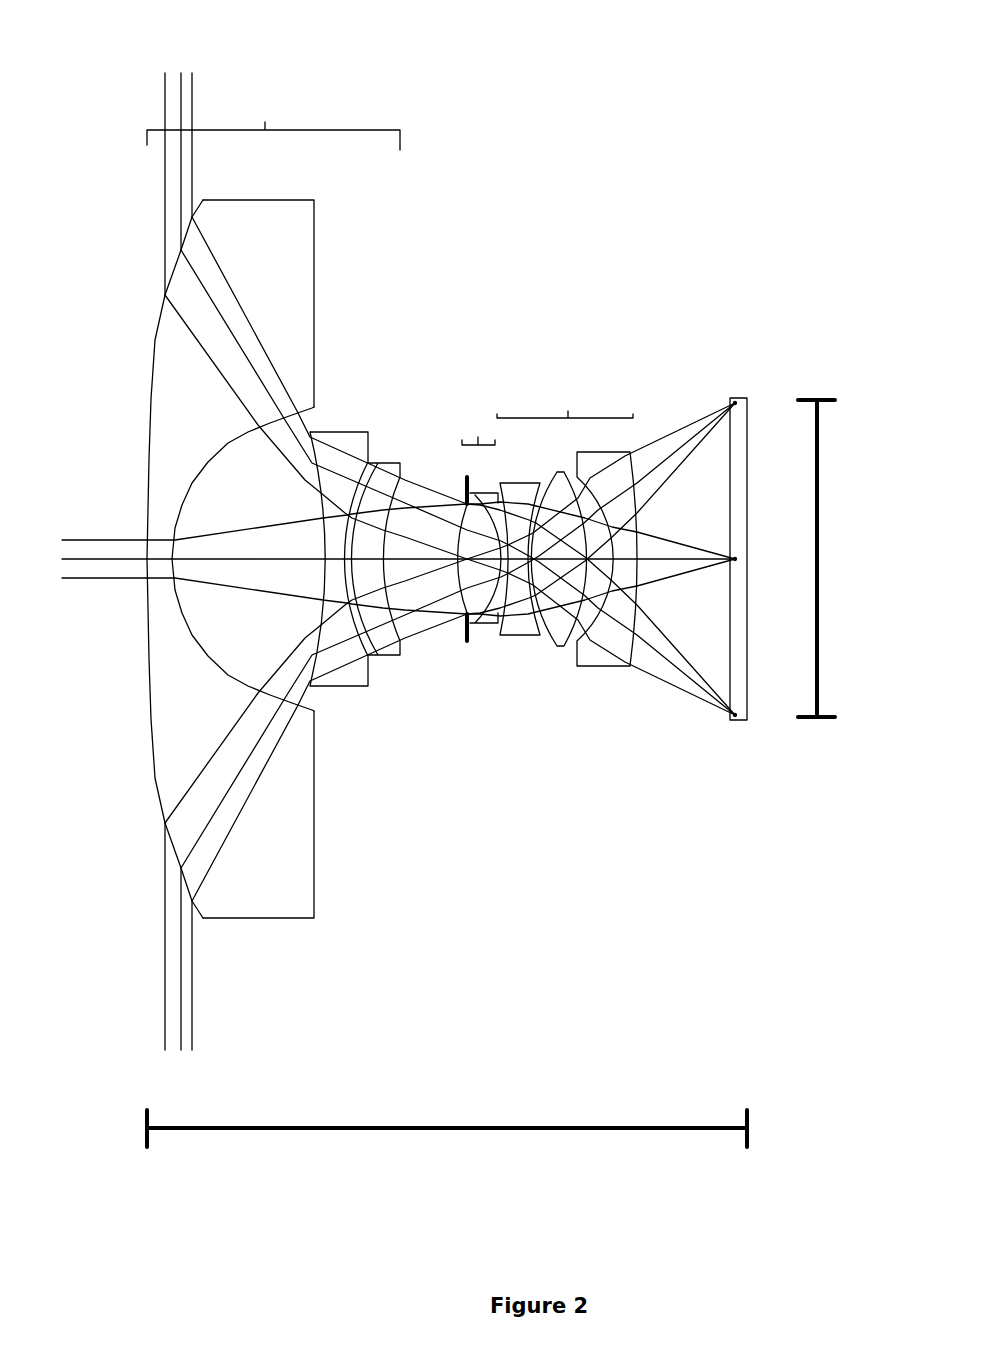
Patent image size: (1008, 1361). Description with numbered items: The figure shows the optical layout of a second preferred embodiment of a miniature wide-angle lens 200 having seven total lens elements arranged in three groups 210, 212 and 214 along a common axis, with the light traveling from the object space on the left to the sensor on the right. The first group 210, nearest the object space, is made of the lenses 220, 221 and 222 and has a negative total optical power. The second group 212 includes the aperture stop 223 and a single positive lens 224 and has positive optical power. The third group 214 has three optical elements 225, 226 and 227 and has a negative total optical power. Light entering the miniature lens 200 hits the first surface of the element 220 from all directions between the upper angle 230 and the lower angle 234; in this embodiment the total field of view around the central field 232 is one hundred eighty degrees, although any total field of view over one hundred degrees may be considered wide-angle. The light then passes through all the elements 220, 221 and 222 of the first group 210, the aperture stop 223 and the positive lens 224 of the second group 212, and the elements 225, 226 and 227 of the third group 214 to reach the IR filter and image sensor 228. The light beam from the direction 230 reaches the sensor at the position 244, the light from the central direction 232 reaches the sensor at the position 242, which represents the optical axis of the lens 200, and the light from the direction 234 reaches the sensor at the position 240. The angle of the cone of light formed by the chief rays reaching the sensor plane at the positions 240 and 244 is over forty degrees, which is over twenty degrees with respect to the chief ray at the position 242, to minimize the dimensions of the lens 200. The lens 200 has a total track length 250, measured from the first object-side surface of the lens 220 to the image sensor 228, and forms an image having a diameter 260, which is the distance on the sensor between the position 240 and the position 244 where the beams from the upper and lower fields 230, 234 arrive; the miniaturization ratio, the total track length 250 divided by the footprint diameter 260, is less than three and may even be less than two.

The miniature wide-angle lens 200 is at (398, 282).
The first group 210 is at (273, 123).
The second group 212 is at (475, 430).
The third group 214 is at (565, 403).
The lens 220 is at (230, 573).
The lens 221 is at (339, 573).
The lens 222 is at (383, 573).
The aperture stop 223 is at (457, 643).
The positive lens 224 is at (479, 589).
The optical element 225 is at (517, 600).
The optical element 226 is at (558, 581).
The optical element 227 is at (607, 580).
The IR filter and image sensor 228 is at (737, 576).
The upper angle 230 is at (442, 379).
The central field 232 is at (396, 559).
The lower angle 234 is at (443, 744).
The position 240 is at (760, 405).
The position 242 is at (760, 561).
The position 244 is at (760, 718).
The total track length 250 is at (447, 1140).
The diameter 260 is at (831, 558).